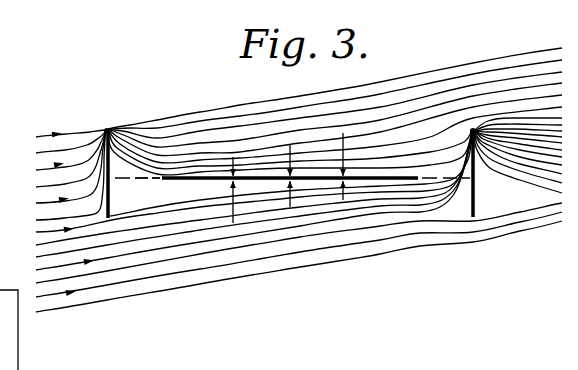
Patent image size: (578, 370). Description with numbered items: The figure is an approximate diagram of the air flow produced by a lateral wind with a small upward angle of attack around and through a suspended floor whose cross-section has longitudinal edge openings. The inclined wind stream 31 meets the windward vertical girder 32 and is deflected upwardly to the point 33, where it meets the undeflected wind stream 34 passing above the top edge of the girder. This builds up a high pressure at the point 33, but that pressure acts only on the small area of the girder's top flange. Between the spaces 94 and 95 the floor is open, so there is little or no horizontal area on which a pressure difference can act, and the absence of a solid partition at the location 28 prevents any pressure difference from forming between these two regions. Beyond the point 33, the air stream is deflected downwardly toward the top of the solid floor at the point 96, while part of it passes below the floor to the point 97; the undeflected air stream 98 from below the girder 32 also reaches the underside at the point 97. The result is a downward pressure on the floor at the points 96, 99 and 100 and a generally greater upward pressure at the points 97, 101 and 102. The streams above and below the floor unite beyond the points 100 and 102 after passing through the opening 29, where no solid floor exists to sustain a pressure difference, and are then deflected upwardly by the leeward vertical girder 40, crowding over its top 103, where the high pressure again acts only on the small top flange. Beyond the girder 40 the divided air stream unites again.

The partition location 28 is at (152, 178).
The opening 29 is at (428, 177).
The inclined wind stream 31 is at (38, 222).
The windward vertical girder 32 is at (111, 207).
The top edge of windward girder 33 is at (107, 129).
The undeflected wind stream 34 is at (43, 136).
The leeward vertical girder 40 is at (476, 198).
The upper space 94 is at (130, 168).
The lower space 95 is at (136, 189).
The top of solid floor 96 is at (221, 164).
The underside of solid floor 97 is at (232, 188).
The undeflected air stream below girder 98 is at (254, 186).
The floor top pressure point 99 is at (278, 160).
The floor top pressure point 100 is at (342, 163).
The floor underside pressure point 101 is at (289, 188).
The floor underside pressure point 102 is at (342, 188).
The top of leeward girder 103 is at (473, 128).